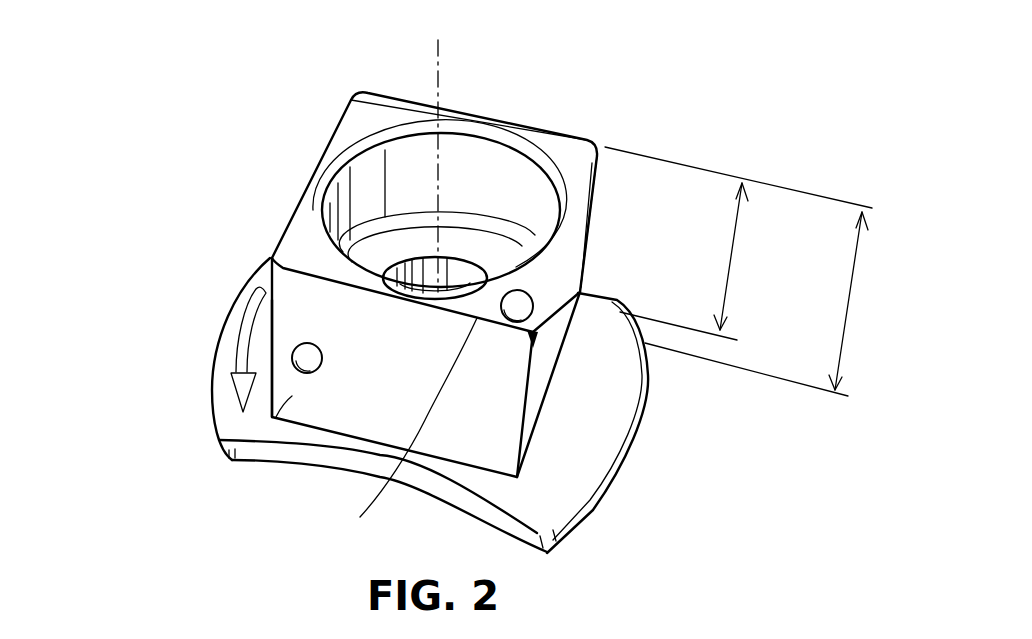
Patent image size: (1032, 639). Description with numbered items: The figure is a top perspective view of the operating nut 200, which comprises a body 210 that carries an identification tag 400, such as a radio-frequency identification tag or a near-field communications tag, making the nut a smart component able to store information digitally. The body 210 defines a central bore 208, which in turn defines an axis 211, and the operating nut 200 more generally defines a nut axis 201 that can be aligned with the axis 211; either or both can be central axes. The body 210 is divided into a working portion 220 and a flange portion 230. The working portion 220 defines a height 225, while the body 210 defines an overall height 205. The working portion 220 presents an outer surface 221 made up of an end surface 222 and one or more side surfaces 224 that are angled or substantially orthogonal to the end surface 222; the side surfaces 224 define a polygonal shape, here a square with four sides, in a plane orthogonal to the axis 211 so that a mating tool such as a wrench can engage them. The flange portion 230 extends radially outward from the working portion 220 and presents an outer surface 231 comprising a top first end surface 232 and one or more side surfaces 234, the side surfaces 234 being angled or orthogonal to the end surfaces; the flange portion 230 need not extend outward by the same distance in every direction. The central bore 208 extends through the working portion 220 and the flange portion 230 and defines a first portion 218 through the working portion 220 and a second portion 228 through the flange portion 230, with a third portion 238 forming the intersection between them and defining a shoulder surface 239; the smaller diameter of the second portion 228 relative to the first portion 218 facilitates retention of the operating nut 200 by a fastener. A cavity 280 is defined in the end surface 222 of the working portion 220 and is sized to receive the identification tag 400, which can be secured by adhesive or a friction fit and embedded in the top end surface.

The operating nut 200 is at (228, 108).
The nut axis 201 is at (440, 50).
The axis 211 is at (513, 148).
The central bore 208 is at (463, 163).
The first portion 218 is at (430, 156).
The second portion 228 is at (413, 253).
The third portion 238 is at (490, 260).
The shoulder surface 239 is at (489, 177).
The end surface 222 is at (563, 153).
The working portion 220 is at (572, 258).
The height 225 is at (730, 267).
The overall height 205 is at (850, 292).
The flange portion 230 is at (638, 410).
The first end surface 232 is at (678, 423).
The cavity 280 is at (292, 352).
The outer surface 231 is at (227, 410).
The outer surface 221 is at (273, 417).
The body 210 is at (340, 403).
The identification tag 400 is at (392, 425).
The side surfaces 234 is at (343, 453).
The side surfaces 224 is at (477, 433).